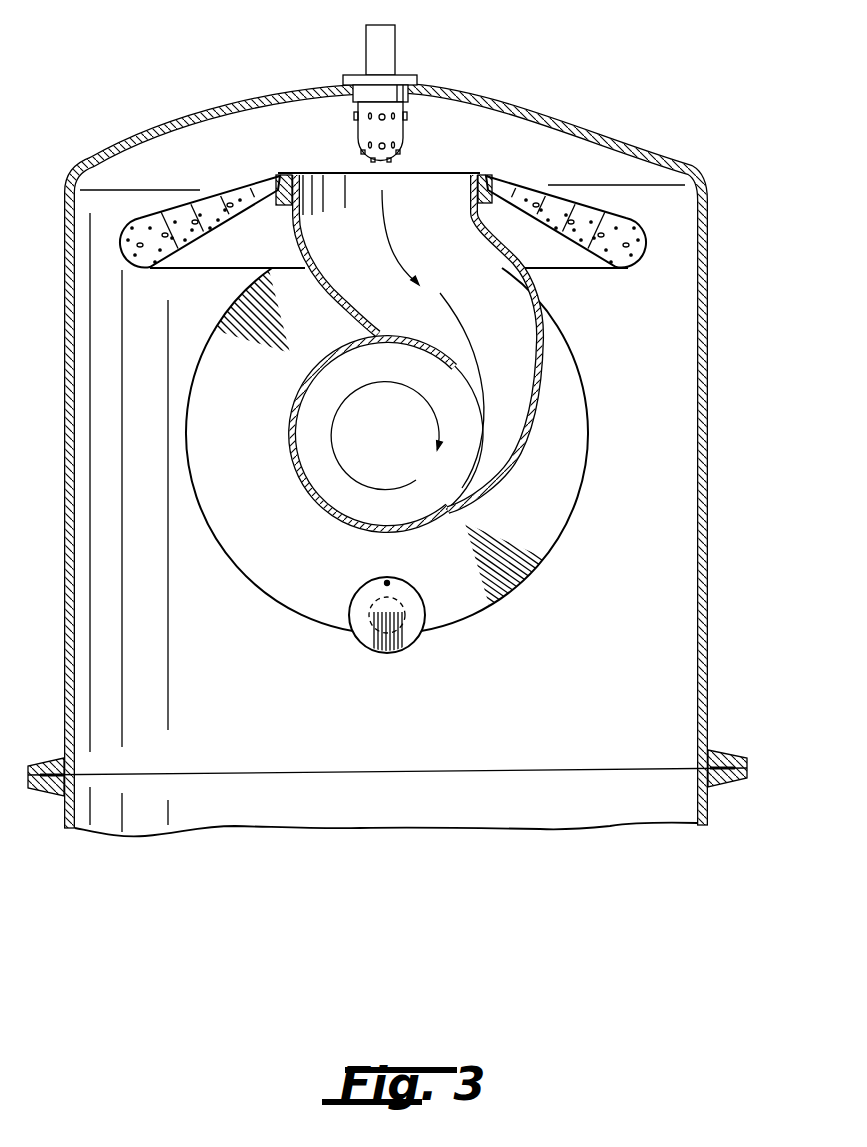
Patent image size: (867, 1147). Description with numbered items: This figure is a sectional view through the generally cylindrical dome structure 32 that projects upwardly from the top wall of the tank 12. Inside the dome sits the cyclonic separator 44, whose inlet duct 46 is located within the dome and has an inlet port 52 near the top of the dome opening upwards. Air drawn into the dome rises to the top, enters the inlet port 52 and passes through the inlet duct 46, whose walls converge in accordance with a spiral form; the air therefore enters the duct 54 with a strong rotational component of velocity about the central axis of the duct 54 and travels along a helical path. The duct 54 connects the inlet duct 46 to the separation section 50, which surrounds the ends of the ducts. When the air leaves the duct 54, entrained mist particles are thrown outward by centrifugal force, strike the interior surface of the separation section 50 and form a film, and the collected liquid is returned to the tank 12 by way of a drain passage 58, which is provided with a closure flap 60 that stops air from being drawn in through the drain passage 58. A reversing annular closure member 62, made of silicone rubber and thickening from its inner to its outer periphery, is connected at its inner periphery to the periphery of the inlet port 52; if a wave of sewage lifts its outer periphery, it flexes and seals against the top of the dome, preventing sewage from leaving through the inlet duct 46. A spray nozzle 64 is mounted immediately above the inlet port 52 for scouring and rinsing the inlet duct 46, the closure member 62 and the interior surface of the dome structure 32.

The tank 12 is at (716, 812).
The dome structure 32 is at (122, 90).
The cyclonic separator 44 is at (653, 303).
The inlet duct 46 is at (510, 463).
The separation section 50 is at (463, 610).
The inlet port 52 is at (430, 184).
The duct 54 is at (302, 440).
The drain passage 58 is at (370, 607).
The closure flap 60 is at (370, 637).
The reversing annular closure member 62 is at (643, 235).
The spray nozzle 64 is at (393, 132).